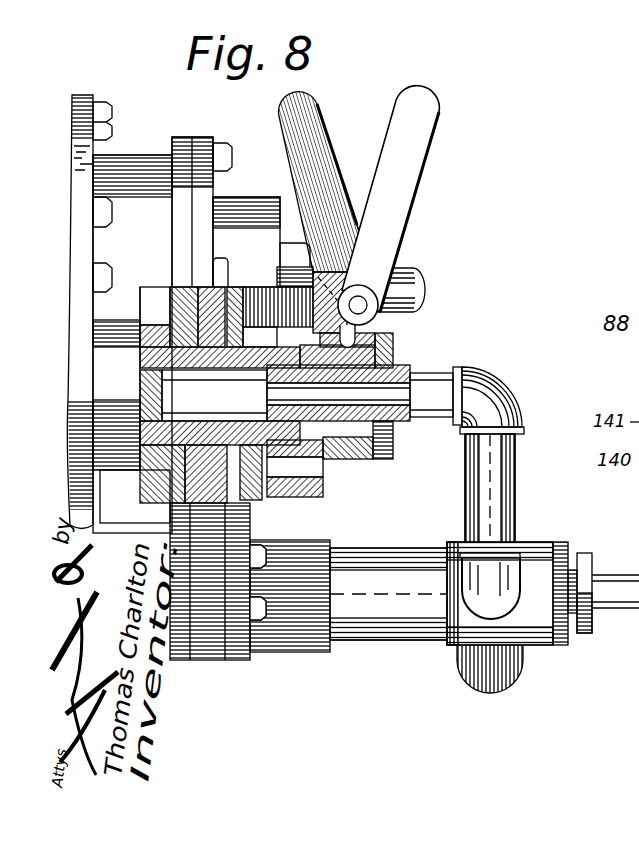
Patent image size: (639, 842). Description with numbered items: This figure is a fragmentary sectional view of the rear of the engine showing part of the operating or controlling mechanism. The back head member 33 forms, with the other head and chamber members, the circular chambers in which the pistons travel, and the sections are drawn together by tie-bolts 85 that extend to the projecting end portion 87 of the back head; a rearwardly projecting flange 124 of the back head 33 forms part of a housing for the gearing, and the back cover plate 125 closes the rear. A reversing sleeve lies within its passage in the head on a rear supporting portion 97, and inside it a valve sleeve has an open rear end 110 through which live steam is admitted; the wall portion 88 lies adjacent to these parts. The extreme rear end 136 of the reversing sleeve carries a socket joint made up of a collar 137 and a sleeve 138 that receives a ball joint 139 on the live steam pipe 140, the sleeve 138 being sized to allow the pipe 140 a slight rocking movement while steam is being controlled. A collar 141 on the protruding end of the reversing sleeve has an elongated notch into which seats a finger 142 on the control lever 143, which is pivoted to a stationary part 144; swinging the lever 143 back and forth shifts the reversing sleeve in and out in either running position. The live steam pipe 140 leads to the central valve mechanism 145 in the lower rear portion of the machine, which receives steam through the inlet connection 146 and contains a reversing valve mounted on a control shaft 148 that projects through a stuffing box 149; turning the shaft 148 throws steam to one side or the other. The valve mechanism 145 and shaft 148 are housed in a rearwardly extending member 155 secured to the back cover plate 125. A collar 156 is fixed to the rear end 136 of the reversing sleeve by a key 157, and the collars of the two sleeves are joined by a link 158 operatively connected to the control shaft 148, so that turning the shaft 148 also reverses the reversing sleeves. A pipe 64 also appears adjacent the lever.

The back head member 33 is at (92, 175).
The pipe 64 is at (419, 279).
The tie-bolts 85 is at (106, 109).
The projecting end portion 87 is at (81, 96).
The housing wall 88 is at (112, 352).
The rear supporting portion 97 is at (162, 350).
The rear end 110 is at (147, 401).
The rearwardly projecting flange 124 is at (156, 163).
The back cover plate 125 is at (204, 148).
The extreme rear end 136 is at (368, 460).
The collar 137 is at (266, 387).
The sleeve 138 is at (387, 360).
The ball joint 139 is at (331, 458).
The live steam pipe 140 is at (463, 368).
The collar 141 is at (357, 460).
The finger 142 is at (390, 332).
The control lever 143 is at (407, 100).
The stationary part 144 is at (358, 305).
The central valve mechanism 145 is at (533, 541).
The inlet connection 146 is at (482, 683).
The control shaft 148 is at (617, 592).
The stuffing box 149 is at (562, 646).
The rearwardly extending member 155 is at (297, 633).
The collar 156 is at (188, 476).
The key 157 is at (252, 352).
The link 158 is at (290, 494).